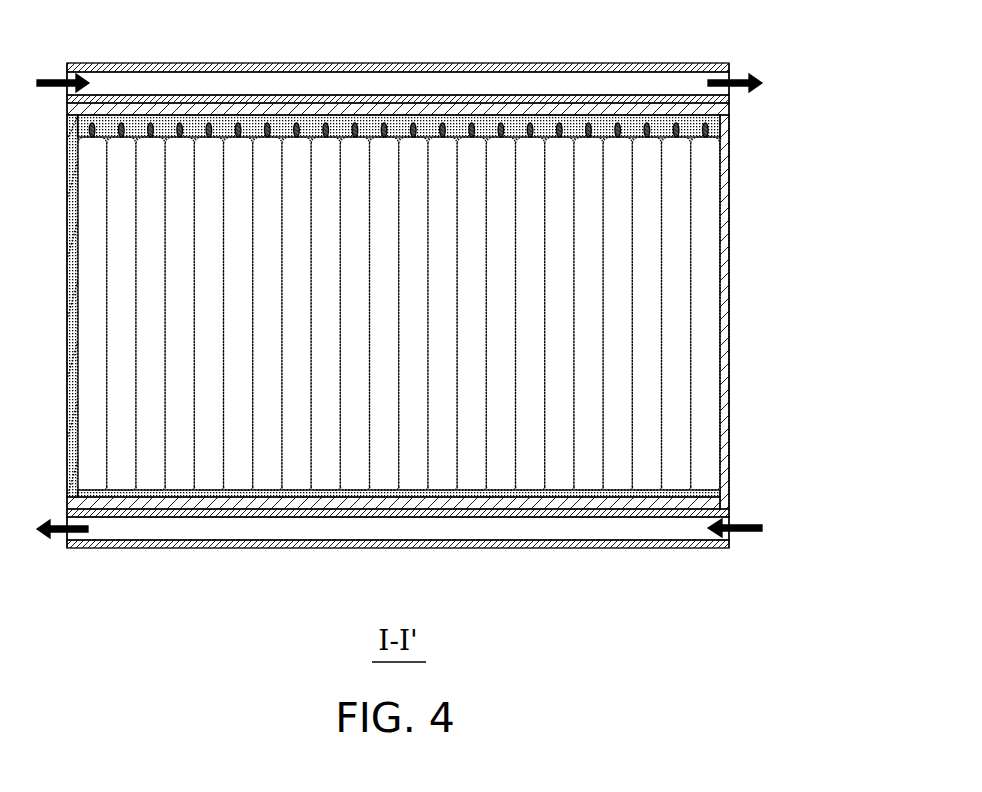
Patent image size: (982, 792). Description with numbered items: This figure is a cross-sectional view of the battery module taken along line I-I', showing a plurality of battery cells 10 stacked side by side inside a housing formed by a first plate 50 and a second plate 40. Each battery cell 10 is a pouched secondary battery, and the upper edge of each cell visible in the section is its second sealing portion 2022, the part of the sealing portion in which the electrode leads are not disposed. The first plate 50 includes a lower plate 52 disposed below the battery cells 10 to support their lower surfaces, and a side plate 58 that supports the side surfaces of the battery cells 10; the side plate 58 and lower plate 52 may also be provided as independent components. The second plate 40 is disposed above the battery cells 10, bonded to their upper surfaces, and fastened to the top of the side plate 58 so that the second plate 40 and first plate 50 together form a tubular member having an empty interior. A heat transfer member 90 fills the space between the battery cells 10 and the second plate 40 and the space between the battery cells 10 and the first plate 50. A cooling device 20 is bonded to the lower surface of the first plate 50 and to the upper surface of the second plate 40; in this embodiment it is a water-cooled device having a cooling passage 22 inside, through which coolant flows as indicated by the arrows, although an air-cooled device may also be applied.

The battery cell 10 is at (707, 322).
The cooling device 20 is at (116, 63).
The cooling passage 22 is at (297, 85).
The second plate 40 is at (600, 115).
The first plate 50 is at (419, 379).
The lower plate 52 is at (665, 503).
The side plate 58 is at (728, 408).
The heat transfer member 90 is at (370, 128).
The second sealing portion 2022 is at (707, 131).